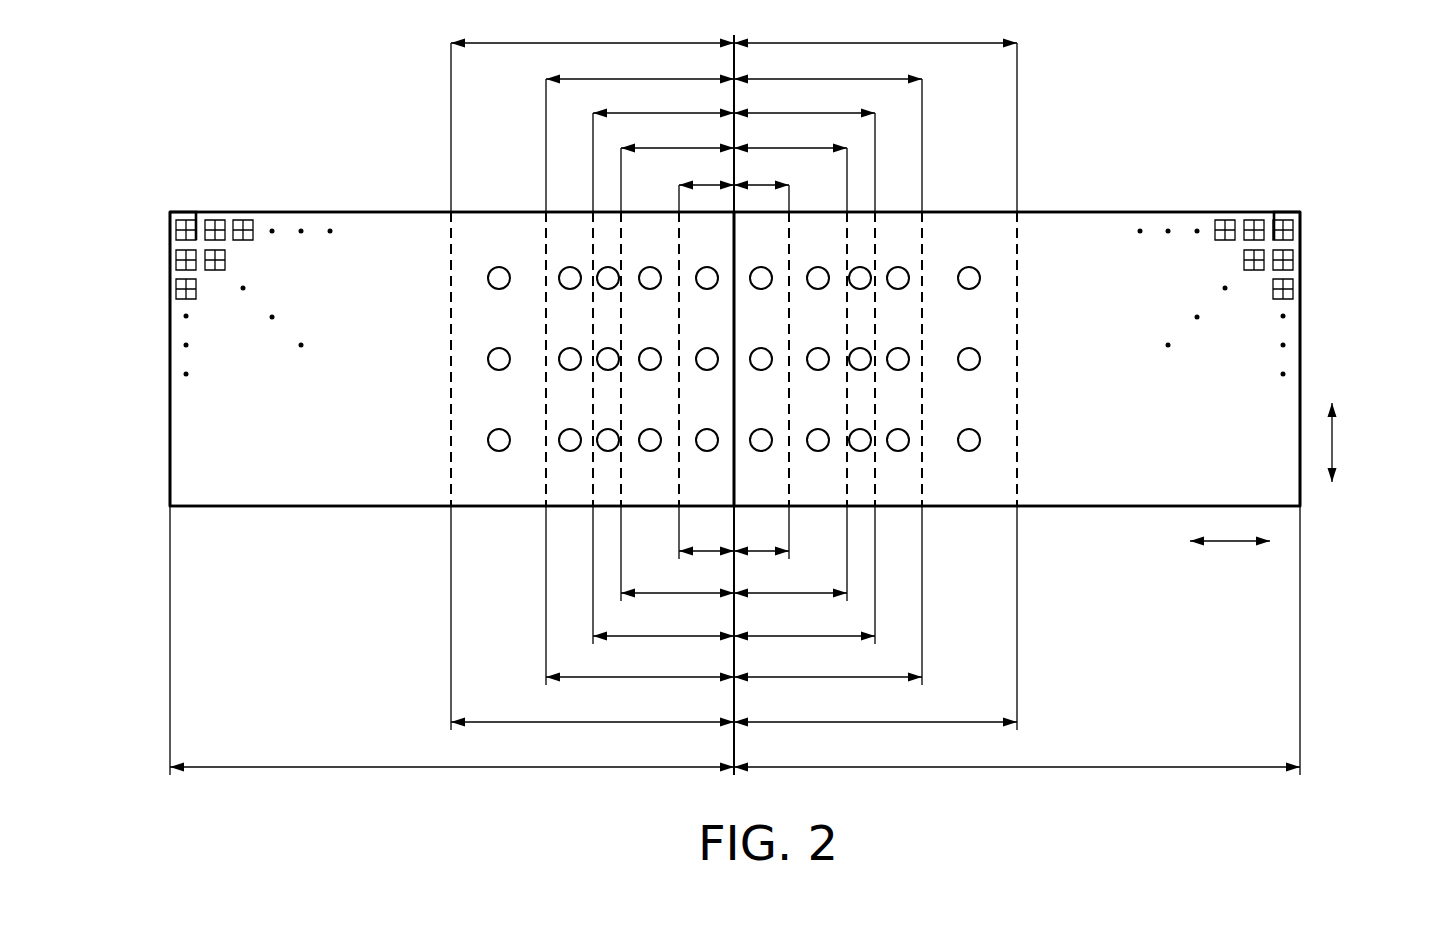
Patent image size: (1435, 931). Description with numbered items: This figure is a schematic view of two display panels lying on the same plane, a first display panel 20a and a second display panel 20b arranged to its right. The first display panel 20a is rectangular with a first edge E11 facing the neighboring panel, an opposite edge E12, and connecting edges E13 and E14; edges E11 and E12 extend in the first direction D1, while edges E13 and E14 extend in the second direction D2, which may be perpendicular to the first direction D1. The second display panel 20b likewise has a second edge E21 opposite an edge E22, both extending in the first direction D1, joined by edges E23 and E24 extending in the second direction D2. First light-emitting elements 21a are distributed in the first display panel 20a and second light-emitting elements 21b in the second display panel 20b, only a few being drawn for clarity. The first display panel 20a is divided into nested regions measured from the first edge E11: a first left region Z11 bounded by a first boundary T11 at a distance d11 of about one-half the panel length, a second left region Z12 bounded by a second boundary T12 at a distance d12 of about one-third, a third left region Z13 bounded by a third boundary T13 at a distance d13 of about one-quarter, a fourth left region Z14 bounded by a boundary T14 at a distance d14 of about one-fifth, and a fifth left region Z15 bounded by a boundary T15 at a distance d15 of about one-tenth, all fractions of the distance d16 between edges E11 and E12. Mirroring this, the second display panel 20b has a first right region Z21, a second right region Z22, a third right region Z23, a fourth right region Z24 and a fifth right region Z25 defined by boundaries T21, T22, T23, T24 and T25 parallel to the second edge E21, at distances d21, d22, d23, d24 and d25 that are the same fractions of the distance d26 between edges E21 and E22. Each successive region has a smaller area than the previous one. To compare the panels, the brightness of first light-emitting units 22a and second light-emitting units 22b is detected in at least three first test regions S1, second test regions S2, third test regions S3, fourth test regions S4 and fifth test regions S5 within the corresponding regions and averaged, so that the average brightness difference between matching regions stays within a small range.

The first display panel 20a is at (214, 184).
The second display panel 20b is at (1254, 184).
The first light-emitting elements 21a is at (168, 220).
The second light-emitting elements 21b is at (1300, 220).
The first light-emitting units 22a is at (182, 237).
The second light-emitting units 22b is at (1286, 237).
The first edge E11 is at (733, 294).
The edge E12 is at (170, 356).
The edge E13 is at (283, 212).
The edge E14 is at (283, 522).
The second edge E21 is at (737, 270).
The edge E22 is at (1301, 356).
The edge E23 is at (1187, 212).
The edge E24 is at (1123, 522).
The first boundary T11 is at (451, 232).
The second boundary T12 is at (546, 236).
The third boundary T13 is at (593, 255).
The boundary T14 is at (621, 465).
The boundary T15 is at (679, 489).
The first boundary T21 is at (1017, 232).
The boundary T22 is at (922, 236).
The boundary T23 is at (875, 255).
The boundary T24 is at (847, 465).
The boundary T25 is at (789, 489).
The first test regions S1 is at (488, 359).
The second test regions S2 is at (570, 348).
The third test regions S3 is at (608, 370).
The fourth test regions S4 is at (650, 348).
The fifth test regions S5 is at (707, 370).
The first left region Z11 is at (592, 114).
The second left region Z12 is at (640, 132).
The third left region Z13 is at (663, 149).
The fourth left region Z14 is at (677, 166).
The fifth left region Z15 is at (706, 185).
The first right region Z21 is at (875, 114).
The second right region Z22 is at (828, 132).
The third right region Z23 is at (804, 149).
The fourth right region Z24 is at (790, 166).
The fifth right region Z25 is at (761, 185).
The distance d11 is at (592, 618).
The distance d12 is at (640, 595).
The distance d13 is at (663, 575).
The distance d14 is at (677, 553).
The distance d15 is at (706, 532).
The distance d16 is at (452, 640).
The distance d21 is at (875, 618).
The distance d22 is at (828, 595).
The distance d23 is at (804, 575).
The distance d24 is at (790, 553).
The distance d25 is at (761, 532).
The distance d26 is at (1017, 640).
The first direction D1 is at (1350, 442).
The second direction D2 is at (1230, 560).